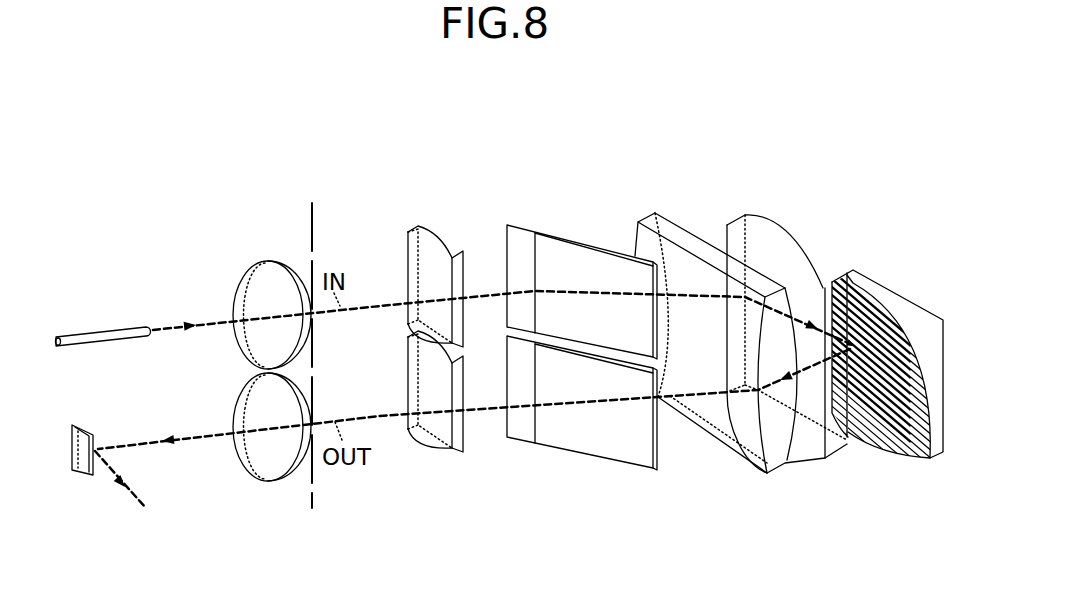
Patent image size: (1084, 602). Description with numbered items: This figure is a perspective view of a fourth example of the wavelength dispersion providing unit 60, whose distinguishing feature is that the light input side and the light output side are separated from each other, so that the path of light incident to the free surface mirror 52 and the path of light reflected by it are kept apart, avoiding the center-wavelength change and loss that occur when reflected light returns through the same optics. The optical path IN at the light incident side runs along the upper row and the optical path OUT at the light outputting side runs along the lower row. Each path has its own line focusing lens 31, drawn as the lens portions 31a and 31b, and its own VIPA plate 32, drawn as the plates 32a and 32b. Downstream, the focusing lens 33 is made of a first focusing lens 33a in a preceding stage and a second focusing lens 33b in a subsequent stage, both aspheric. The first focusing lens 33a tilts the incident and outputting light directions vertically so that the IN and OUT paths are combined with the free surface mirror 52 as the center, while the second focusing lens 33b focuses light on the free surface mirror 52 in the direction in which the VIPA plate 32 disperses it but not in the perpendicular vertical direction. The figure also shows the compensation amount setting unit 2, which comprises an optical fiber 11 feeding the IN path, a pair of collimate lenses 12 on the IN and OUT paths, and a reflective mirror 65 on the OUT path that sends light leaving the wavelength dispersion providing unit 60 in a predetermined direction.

The compensation amount setting unit 2 is at (209, 201).
The optical fiber 11 is at (107, 333).
The collimate lens 12 is at (263, 261).
The line focusing lens 31 is at (432, 195).
The line focusing lens 31a is at (438, 241).
The line focusing lens 31b is at (463, 456).
The VIPA plate 32 is at (563, 178).
The VIPA plate 32a is at (536, 232).
The VIPA plate 32b is at (562, 452).
The focusing lens 33 is at (739, 194).
The first focusing lens 33a is at (658, 214).
The second focusing lens 33b is at (761, 217).
The free surface mirror 52 is at (868, 284).
The wavelength dispersion providing unit 60 is at (683, 126).
The reflective mirror 65 is at (76, 472).